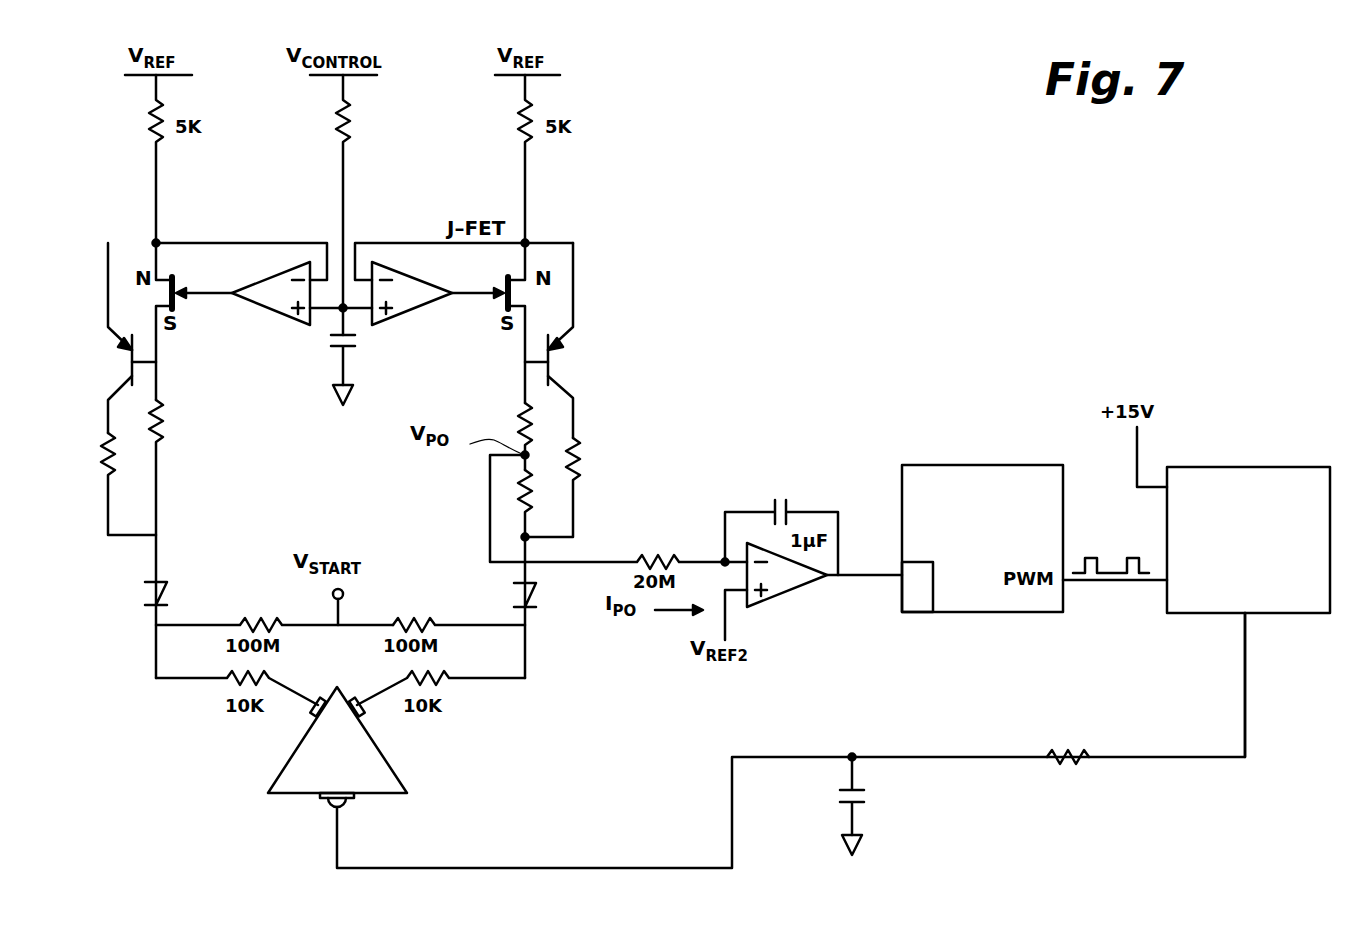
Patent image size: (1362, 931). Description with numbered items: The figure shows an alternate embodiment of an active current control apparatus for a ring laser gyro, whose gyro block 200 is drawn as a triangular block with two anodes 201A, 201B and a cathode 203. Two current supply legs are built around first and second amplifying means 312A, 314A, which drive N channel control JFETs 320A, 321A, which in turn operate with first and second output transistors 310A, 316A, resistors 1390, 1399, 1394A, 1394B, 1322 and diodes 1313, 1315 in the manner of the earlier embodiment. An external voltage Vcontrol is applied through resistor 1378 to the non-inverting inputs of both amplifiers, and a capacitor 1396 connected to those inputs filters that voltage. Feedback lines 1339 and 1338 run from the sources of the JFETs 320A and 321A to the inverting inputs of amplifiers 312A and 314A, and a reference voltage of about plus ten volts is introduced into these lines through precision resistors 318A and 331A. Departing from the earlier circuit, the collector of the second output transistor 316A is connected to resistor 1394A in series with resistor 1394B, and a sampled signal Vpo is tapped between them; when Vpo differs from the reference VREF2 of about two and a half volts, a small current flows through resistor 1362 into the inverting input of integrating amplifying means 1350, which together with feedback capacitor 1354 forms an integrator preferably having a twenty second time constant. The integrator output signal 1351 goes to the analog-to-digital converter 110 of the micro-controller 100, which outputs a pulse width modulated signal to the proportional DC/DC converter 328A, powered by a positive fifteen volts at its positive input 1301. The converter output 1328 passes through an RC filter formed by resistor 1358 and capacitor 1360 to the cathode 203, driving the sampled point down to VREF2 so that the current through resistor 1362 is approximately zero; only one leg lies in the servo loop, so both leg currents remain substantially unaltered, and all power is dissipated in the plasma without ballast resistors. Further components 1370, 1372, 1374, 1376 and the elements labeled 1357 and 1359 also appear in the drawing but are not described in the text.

The precision resistor 318A is at (124, 159).
The resistor 1378 is at (350, 124).
The precision resistor 331A is at (533, 113).
The first control JFET 320A is at (170, 258).
The feedback line 1339 is at (268, 244).
The feedback line 1338 is at (389, 243).
The second control JFET 321A is at (520, 266).
The first amplifying means 312A is at (265, 299).
The second amplifying means 314A is at (406, 313).
The capacitor 1396 is at (352, 339).
The first output transistor 310A is at (124, 360).
The second output transistor 316A is at (560, 356).
The resistor 1399 is at (172, 426).
The resistor 1390 is at (100, 462).
The resistor 1322 is at (579, 454).
The resistor 1394A is at (520, 428).
The resistor 1394B is at (525, 506).
The resistor 1362 is at (660, 555).
The resistor (100M) 1370 is at (272, 621).
The resistor (100M) 1372 is at (444, 608).
The diode 1313 is at (150, 590).
The diode 1315 is at (532, 590).
The resistor (10K) 1374 is at (225, 688).
The resistor (10K) 1376 is at (442, 679).
The gyro block 200 is at (400, 782).
The anode 201A is at (372, 708).
The anode 201B is at (296, 708).
The cathode 203 is at (332, 806).
The line 1359 is at (630, 856).
The capacitor 1360 is at (861, 793).
The resistor 1358 is at (1100, 793).
The output 1328 is at (1250, 730).
The integrating amplifying means 1350 is at (788, 594).
The feedback capacitor 1354 is at (763, 487).
The signal 1351 is at (868, 576).
The micro-controller 100 is at (982, 538).
The analog-to-digital converter 110 is at (918, 605).
The PWM line 1357 is at (1106, 583).
The pulse width modulated DC/DC converter means 328A is at (1248, 540).
The positive input 1301 is at (1156, 482).